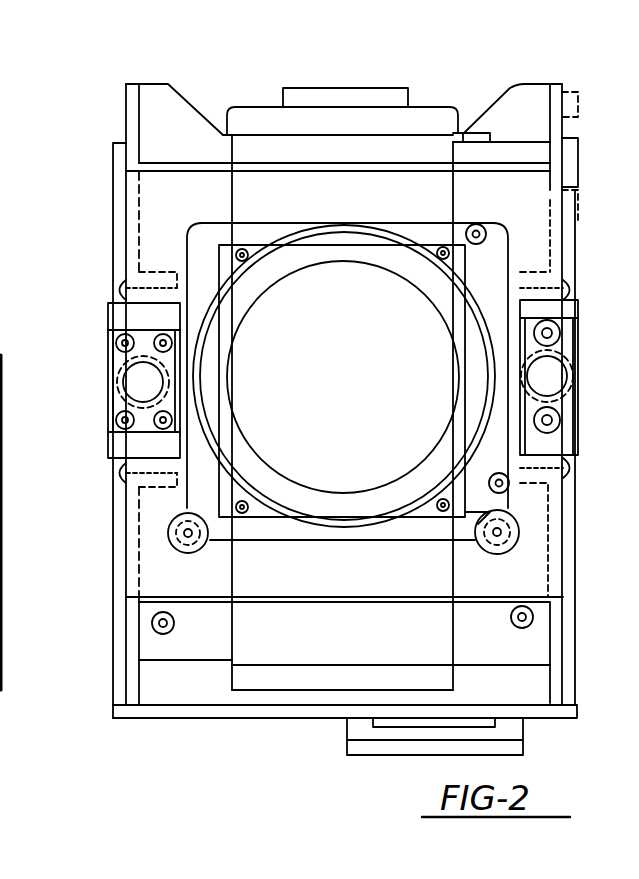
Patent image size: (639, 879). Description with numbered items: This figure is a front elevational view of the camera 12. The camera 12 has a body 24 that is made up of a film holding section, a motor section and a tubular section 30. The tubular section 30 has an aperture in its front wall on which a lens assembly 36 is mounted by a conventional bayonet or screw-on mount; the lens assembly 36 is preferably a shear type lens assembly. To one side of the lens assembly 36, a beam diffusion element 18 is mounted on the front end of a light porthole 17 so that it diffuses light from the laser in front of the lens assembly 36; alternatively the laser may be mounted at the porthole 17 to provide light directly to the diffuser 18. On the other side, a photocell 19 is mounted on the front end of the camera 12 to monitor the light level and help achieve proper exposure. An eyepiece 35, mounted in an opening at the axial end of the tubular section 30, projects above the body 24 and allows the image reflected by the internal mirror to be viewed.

The camera 12 is at (166, 724).
The light porthole 17 is at (108, 362).
The beam diffusion element 18 is at (138, 388).
The photocell 19 is at (565, 350).
The body 24 is at (104, 688).
The tubular section 30 is at (250, 235).
The eyepiece 35 is at (381, 85).
The lens assembly 36 is at (340, 527).